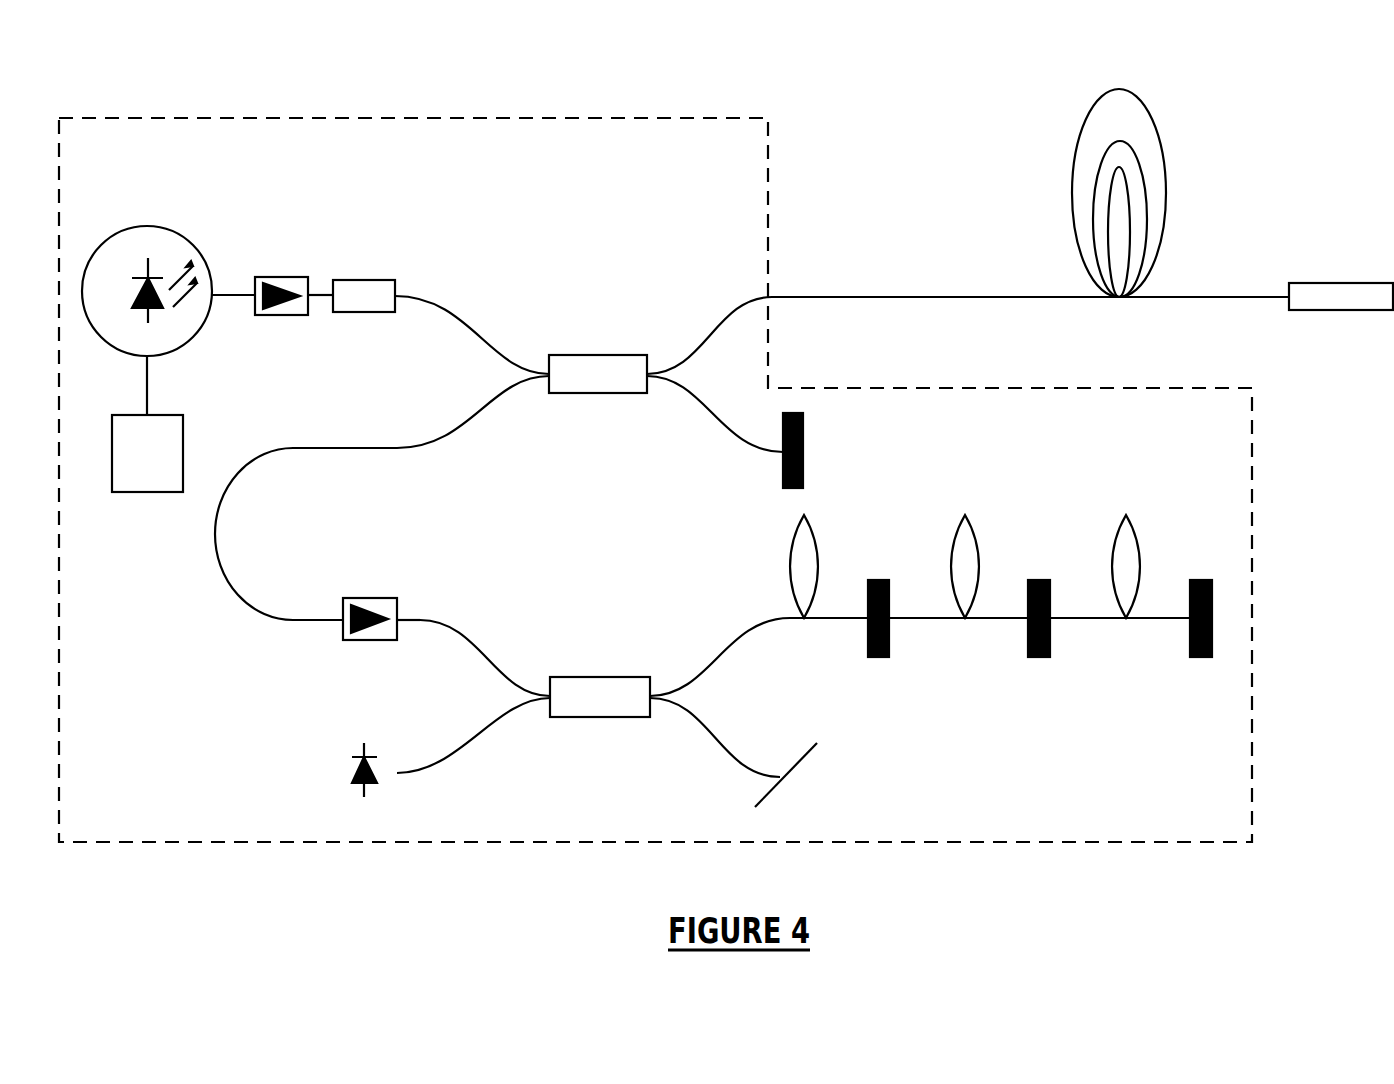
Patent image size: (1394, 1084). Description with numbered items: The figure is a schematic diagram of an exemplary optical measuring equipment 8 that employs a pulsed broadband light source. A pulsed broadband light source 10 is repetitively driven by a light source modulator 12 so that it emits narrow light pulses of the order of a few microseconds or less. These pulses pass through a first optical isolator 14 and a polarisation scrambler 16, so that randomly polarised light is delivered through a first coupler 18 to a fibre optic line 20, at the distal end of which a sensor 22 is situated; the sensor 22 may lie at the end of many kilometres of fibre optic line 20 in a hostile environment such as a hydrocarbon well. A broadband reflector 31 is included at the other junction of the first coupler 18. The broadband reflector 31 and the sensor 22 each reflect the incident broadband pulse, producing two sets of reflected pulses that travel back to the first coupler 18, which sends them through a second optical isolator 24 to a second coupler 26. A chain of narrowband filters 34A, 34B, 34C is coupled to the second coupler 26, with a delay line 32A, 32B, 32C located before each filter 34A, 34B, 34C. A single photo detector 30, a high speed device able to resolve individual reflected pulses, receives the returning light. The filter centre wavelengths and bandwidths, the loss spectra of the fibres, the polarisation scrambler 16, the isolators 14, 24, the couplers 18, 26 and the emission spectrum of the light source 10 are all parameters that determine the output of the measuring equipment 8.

The measuring equipment 8 is at (745, 175).
The pulsed broadband light source 10 is at (165, 252).
The light source modulator 12 is at (162, 472).
The first optical isolator 14 is at (280, 275).
The polarisation scrambler 16 is at (402, 285).
The first coupler 18 is at (568, 373).
The fibre optic line 20 is at (1070, 180).
The sensor 22 is at (1330, 310).
The second optical isolator 24 is at (397, 612).
The second coupler 26 is at (607, 682).
The single photo detector 30 is at (355, 767).
The broadband reflector 31 is at (803, 448).
The delay line 32A is at (800, 535).
The delay line 32B is at (960, 535).
The delay line 32C is at (1123, 535).
The narrowband filter 34A is at (878, 580).
The narrowband filter 34B is at (1038, 573).
The narrowband filter 34C is at (1202, 580).